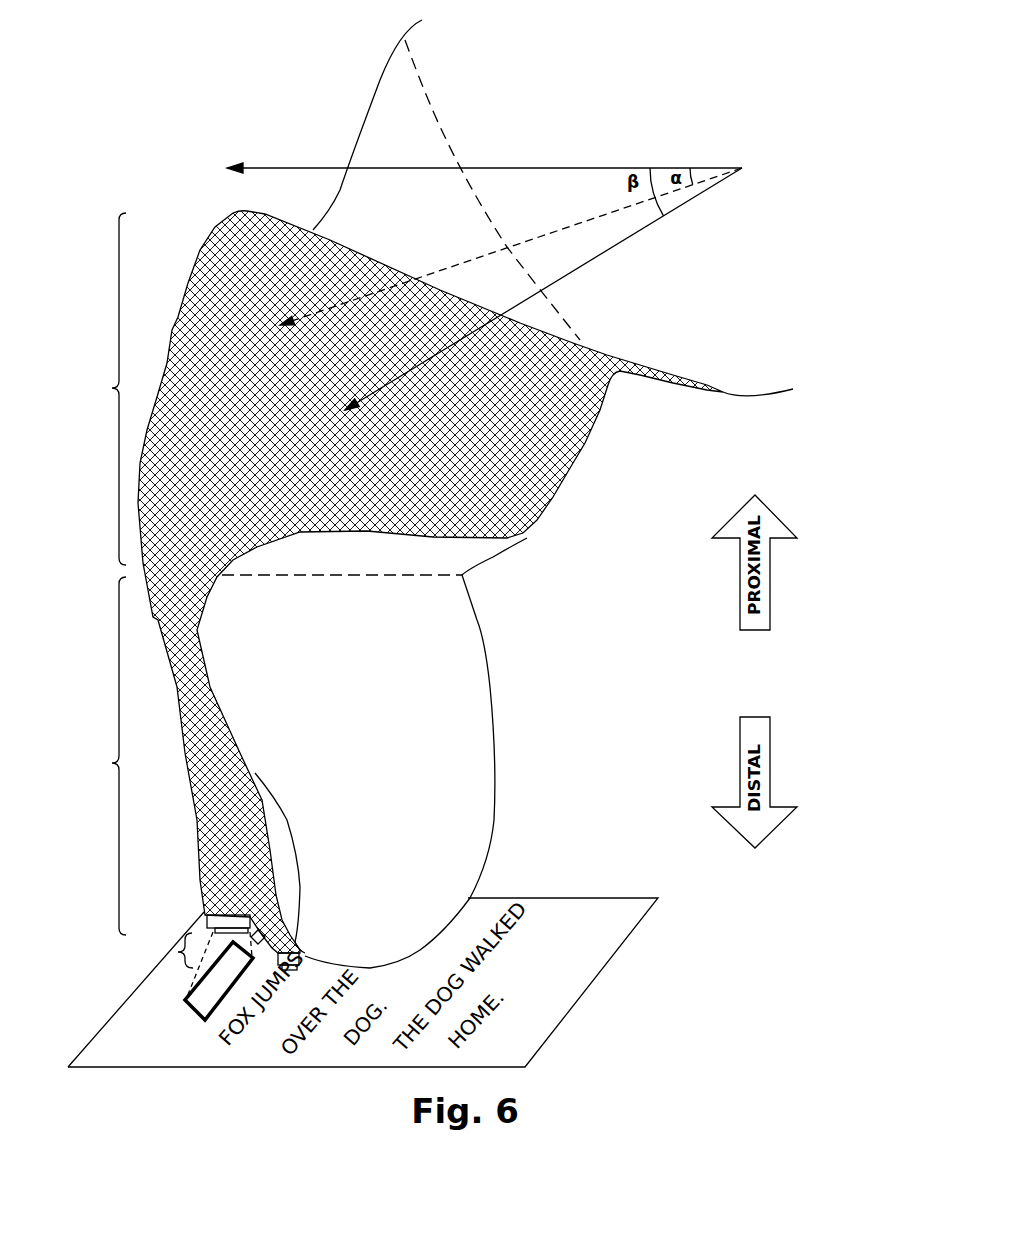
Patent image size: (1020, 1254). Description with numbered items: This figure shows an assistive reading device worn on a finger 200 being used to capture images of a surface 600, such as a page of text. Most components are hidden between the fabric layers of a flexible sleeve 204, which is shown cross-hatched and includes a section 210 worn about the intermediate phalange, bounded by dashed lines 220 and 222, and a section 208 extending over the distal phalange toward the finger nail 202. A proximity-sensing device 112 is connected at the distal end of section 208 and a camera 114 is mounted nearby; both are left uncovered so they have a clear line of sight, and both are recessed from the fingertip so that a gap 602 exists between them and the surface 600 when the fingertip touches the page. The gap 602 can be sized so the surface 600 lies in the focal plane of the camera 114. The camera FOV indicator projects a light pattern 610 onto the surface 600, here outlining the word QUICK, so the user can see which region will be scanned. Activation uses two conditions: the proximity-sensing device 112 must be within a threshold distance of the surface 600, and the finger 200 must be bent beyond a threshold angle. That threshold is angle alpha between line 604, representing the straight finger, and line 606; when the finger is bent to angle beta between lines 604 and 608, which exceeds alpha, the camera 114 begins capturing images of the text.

The proximity-sensing device 112 is at (300, 953).
The camera 114 is at (205, 913).
The finger 200 is at (495, 767).
The finger nail 202 is at (297, 840).
The flexible sleeve 204 is at (570, 468).
The section 208 is at (96, 756).
The section 210 is at (96, 389).
The dashed line 220 is at (340, 576).
The dashed line 222 is at (444, 124).
The surface 600 is at (620, 898).
The gap 602 is at (202, 917).
The line 604 is at (577, 167).
The line 606 is at (530, 240).
The line 608 is at (622, 243).
The light pattern 610 is at (183, 998).